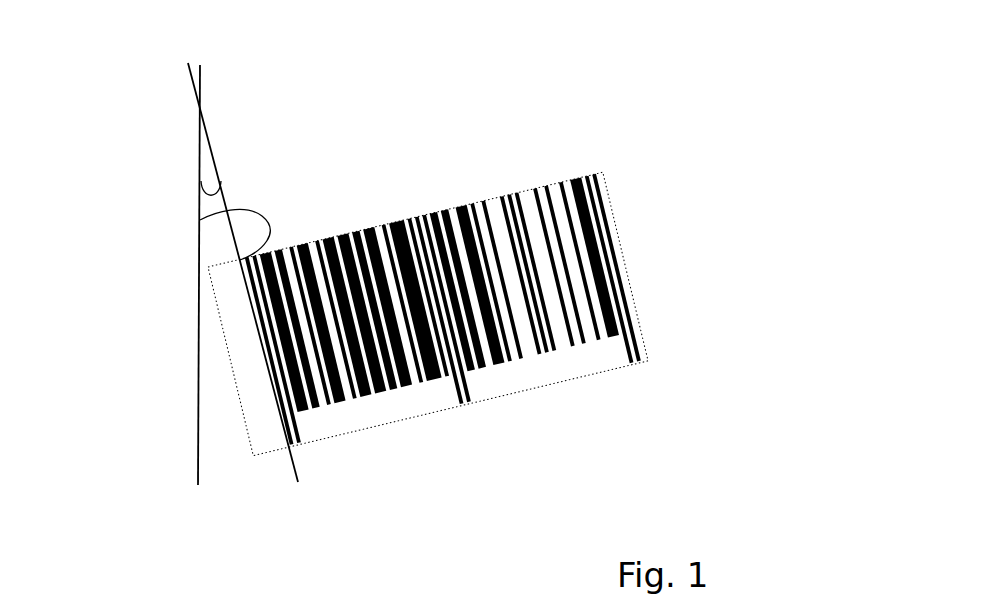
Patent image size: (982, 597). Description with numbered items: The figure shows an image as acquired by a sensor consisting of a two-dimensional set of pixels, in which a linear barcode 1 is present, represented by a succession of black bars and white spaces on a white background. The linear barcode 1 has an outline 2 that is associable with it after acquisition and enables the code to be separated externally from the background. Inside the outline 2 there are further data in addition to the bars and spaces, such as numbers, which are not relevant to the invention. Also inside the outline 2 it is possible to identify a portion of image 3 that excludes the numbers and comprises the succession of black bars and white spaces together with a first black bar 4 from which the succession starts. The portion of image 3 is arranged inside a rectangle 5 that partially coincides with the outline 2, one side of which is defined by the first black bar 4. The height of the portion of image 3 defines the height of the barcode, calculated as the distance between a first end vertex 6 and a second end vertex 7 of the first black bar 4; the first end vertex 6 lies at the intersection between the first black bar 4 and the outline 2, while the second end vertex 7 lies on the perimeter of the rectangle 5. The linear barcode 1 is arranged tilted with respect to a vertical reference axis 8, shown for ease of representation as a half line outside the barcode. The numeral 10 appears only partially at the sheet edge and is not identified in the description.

The linear barcode 1 is at (444, 265).
The outline 2 is at (525, 257).
The portion of image 3 is at (623, 172).
The first black bar 4 is at (277, 367).
The rectangle 5 is at (595, 335).
The first end vertex 6 is at (200, 220).
The second end vertex 7 is at (285, 410).
The vertical reference axis 8 is at (197, 330).
The label assembly 10 is at (545, 592).